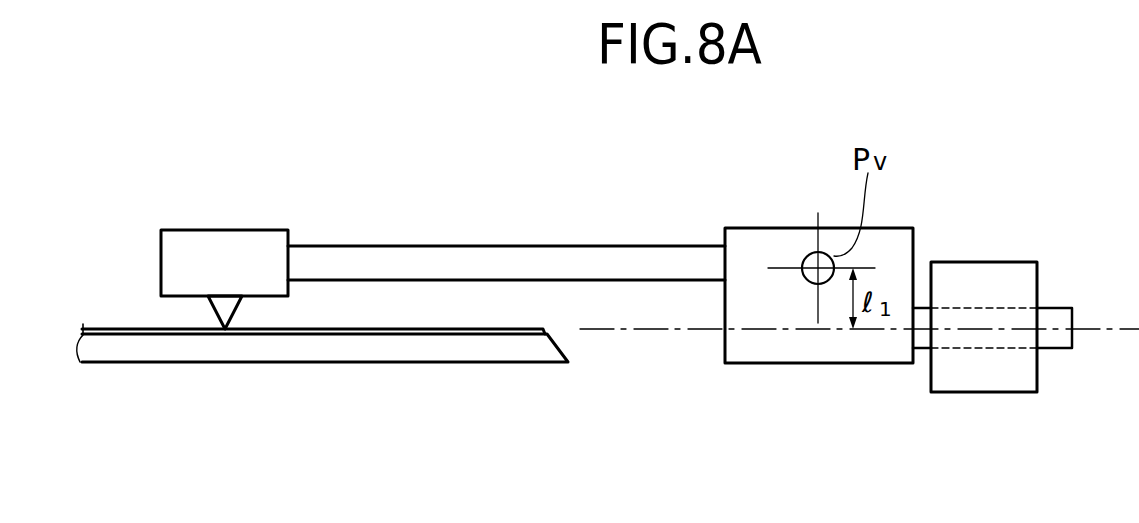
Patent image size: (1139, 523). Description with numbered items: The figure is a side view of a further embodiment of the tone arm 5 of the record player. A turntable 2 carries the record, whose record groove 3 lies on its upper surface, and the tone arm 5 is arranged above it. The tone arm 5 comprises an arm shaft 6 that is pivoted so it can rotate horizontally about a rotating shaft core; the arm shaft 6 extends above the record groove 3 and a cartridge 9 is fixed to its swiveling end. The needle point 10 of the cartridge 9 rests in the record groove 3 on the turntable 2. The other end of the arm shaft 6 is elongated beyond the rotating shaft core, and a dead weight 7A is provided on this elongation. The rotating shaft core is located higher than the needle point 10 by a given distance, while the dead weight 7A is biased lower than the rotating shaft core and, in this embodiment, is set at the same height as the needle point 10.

The turntable 2 is at (532, 365).
The record groove 3 is at (445, 329).
The tone arm 5 is at (443, 215).
The arm shaft 6 is at (485, 246).
The dead weight 7A is at (990, 262).
The cartridge 9 is at (262, 230).
The needle point 10 is at (216, 321).